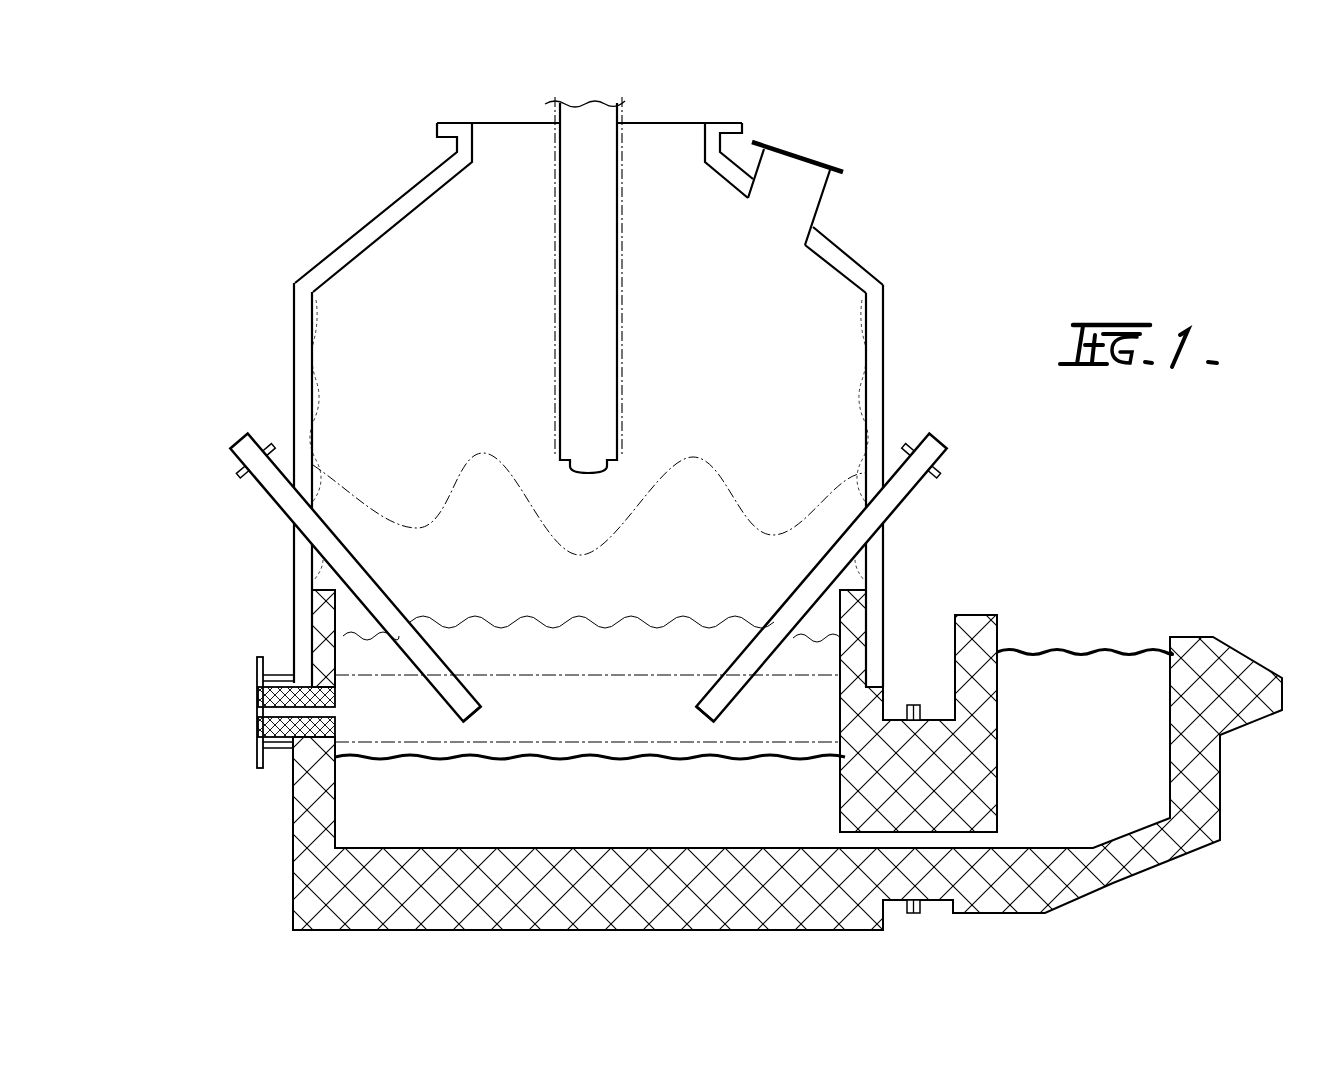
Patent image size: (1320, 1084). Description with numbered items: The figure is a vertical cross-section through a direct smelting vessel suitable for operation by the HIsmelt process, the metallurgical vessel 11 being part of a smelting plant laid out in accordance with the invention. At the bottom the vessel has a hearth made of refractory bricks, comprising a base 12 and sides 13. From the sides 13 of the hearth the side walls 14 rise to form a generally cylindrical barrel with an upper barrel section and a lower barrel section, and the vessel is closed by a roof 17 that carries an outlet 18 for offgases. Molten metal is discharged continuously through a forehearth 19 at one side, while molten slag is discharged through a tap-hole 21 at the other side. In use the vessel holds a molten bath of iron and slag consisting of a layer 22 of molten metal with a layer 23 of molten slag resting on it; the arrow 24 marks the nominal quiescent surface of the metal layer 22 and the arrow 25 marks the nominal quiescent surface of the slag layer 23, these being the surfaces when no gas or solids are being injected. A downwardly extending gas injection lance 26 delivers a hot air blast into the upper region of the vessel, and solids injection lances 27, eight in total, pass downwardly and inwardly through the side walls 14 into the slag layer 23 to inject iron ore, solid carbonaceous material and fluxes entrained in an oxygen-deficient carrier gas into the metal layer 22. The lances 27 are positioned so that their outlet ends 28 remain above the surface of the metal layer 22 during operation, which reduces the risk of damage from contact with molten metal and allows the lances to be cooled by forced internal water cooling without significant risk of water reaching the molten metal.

The metallurgical vessel 11 is at (309, 250).
The base 12 is at (397, 888).
The sides 13 is at (320, 800).
The side walls 14 is at (284, 572).
The roof 17 is at (397, 215).
The outlet 18 is at (833, 183).
The forehearth 19 is at (1090, 762).
The tap-hole 21 is at (257, 723).
The layer of molten metal 22 is at (645, 808).
The layer of molten slag 23 is at (530, 723).
The nominal quiescent surface of the metal layer 24 is at (622, 740).
The nominal quiescent surface of the slag layer 25 is at (622, 673).
The gas injection lance 26 is at (608, 277).
The solids injection lances 27 is at (232, 447).
The outlet ends 28 is at (463, 722).